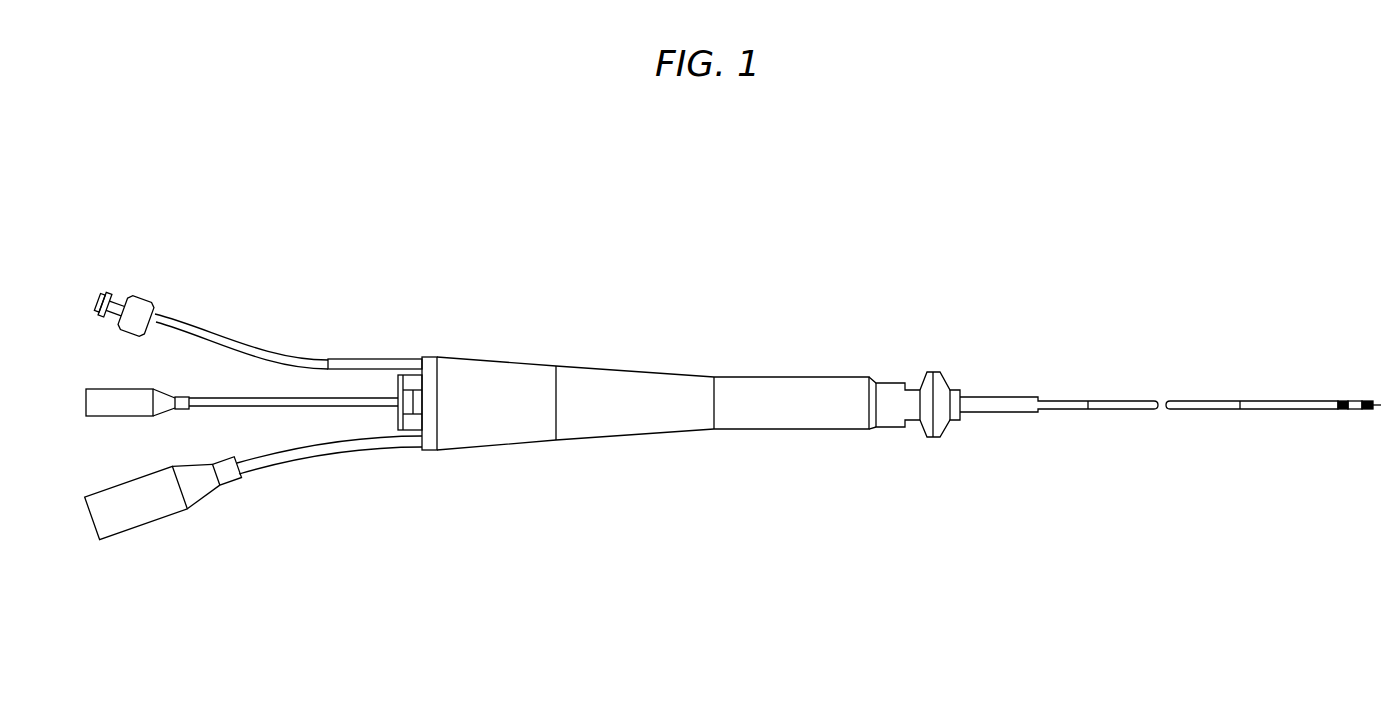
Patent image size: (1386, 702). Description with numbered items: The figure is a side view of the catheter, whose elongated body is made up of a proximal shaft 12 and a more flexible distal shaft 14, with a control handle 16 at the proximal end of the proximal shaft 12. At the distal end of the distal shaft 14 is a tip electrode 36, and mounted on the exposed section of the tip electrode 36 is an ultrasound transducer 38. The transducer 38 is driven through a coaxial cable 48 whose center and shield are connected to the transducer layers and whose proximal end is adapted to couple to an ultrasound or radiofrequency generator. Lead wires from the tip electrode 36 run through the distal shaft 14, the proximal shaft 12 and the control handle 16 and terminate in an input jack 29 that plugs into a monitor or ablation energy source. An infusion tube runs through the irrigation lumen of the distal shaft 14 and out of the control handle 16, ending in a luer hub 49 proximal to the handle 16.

The proximal shaft 12 is at (1125, 401).
The distal shaft 14 is at (1253, 401).
The control handle 16 is at (735, 377).
The input jack 29 is at (142, 410).
The tip electrode 36 is at (1366, 412).
The ultrasound transducer 38 is at (1341, 411).
The coaxial cable 48 is at (273, 462).
The luer hub 49 is at (138, 312).